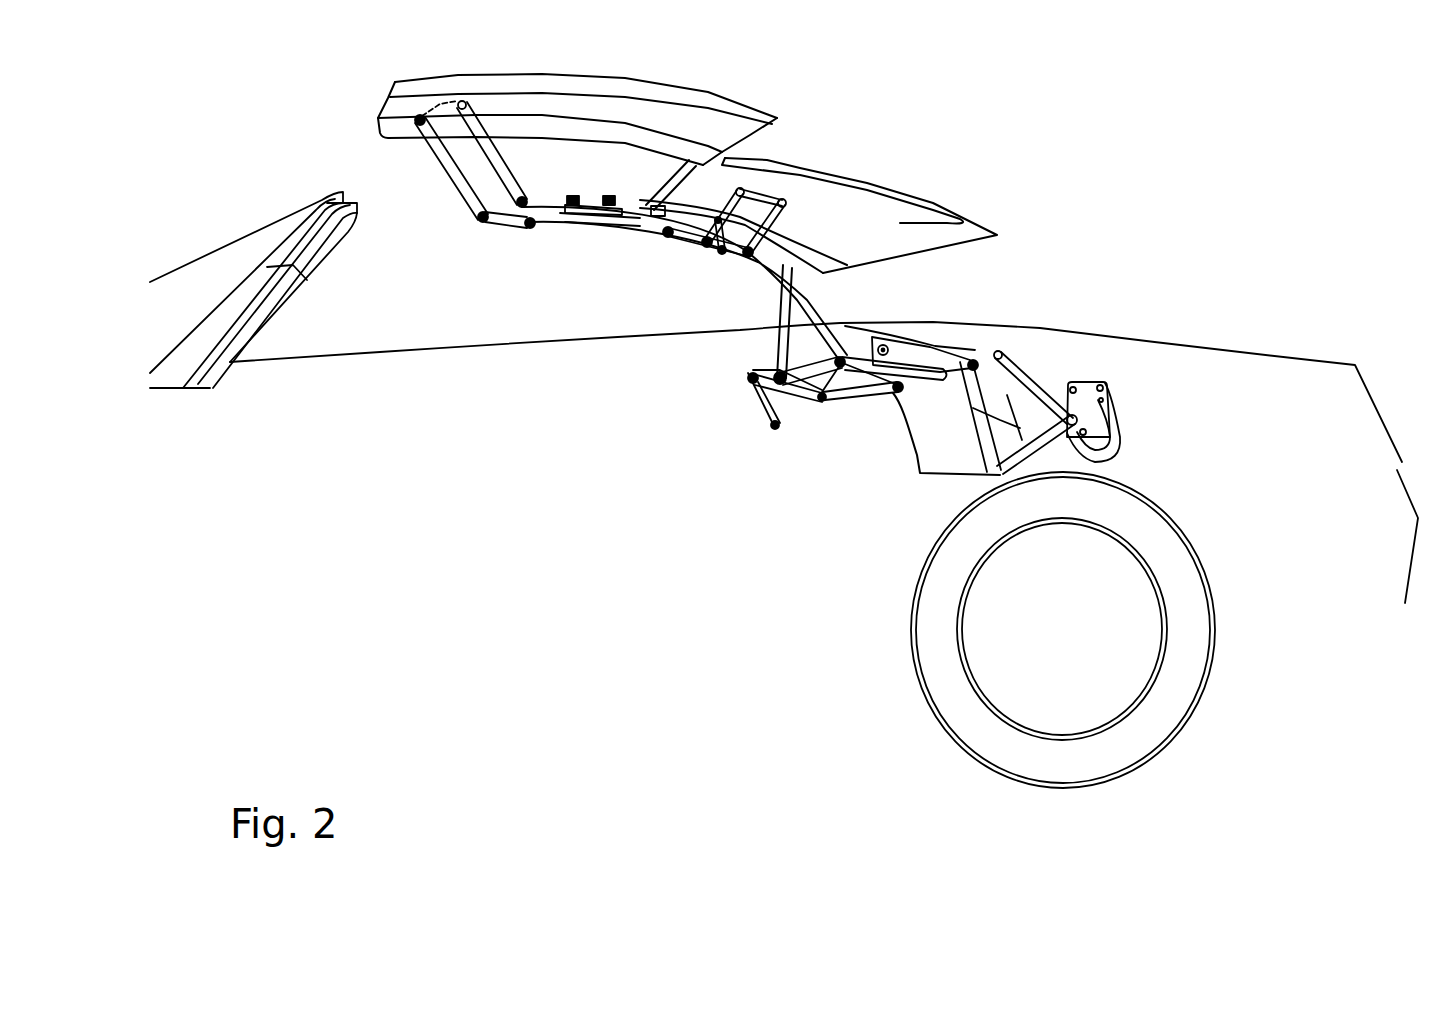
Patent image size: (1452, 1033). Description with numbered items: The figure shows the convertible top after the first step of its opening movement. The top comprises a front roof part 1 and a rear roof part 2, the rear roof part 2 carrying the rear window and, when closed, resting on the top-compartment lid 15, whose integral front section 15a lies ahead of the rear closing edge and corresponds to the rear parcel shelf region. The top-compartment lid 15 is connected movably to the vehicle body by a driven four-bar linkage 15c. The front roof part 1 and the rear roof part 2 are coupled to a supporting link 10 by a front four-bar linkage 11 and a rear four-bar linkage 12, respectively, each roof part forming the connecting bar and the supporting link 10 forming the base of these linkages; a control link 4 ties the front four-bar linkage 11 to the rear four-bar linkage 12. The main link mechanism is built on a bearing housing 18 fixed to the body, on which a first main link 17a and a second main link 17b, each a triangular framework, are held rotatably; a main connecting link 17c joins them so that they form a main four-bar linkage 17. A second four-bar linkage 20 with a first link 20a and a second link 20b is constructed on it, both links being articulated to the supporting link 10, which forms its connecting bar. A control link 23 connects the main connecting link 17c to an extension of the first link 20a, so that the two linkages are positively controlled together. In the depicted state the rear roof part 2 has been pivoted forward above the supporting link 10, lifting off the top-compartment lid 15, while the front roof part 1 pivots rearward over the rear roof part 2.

The front roof part 1 is at (648, 88).
The rear roof part 2 is at (852, 223).
The control link 4 is at (550, 223).
The supporting link 10 is at (500, 224).
The front four-bar linkage 11 is at (470, 172).
The rear four-bar linkage 12 is at (693, 247).
The top-compartment lid 15 is at (1046, 344).
The front section of the top-compartment lid 15a is at (947, 335).
The four-bar linkage 15c is at (1044, 377).
The main four-bar linkage 17 is at (885, 420).
The first main link 17a is at (797, 398).
The second main link 17b is at (940, 381).
The main connecting link 17c is at (862, 393).
The bearing housing 18 is at (918, 471).
The second four-bar linkage 20 is at (792, 314).
The first link 20a is at (793, 345).
The second link 20b is at (812, 313).
The control link 23 is at (760, 393).